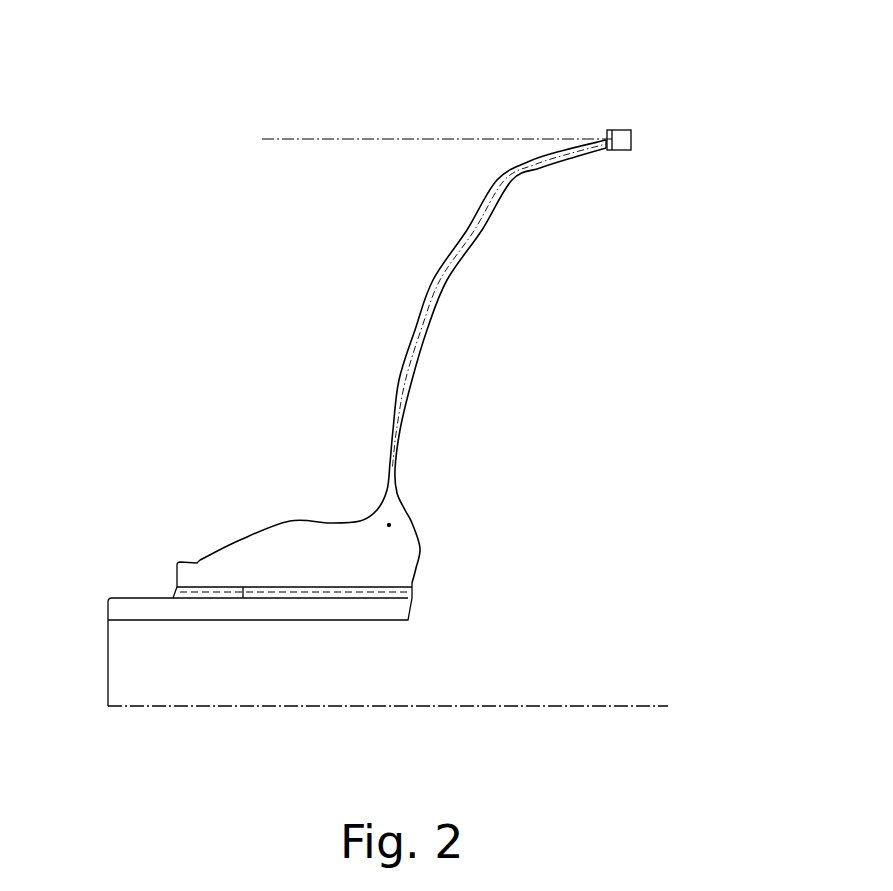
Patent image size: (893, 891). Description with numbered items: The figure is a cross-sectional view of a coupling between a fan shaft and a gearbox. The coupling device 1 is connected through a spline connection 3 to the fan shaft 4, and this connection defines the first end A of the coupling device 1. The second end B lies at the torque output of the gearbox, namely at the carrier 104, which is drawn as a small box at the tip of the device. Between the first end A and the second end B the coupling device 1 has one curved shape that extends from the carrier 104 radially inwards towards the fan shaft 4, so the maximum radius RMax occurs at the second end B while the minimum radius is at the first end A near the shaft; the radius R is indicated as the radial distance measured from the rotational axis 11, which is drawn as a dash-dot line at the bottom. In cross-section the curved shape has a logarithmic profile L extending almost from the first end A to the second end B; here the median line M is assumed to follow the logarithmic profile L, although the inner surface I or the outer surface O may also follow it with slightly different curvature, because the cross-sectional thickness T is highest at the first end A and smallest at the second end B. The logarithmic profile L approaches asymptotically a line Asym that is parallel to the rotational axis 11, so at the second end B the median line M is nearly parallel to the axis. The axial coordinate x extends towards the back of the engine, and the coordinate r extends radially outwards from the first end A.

The coupling device 1 is at (405, 360).
The spline connection 3 is at (175, 590).
The fan shaft 4 is at (127, 610).
The rotational axis 11 is at (203, 707).
The carrier 104 is at (622, 136).
The asymptote line Asym is at (297, 139).
The second end B is at (600, 131).
The outer surface O is at (450, 248).
The logarithmic profile L is at (445, 288).
The inner surface I is at (427, 332).
The cross-sectional thickness T is at (353, 409).
The radial coordinate r is at (389, 525).
The median line M is at (397, 477).
The first end A is at (392, 530).
The axial coordinate x is at (389, 525).
The radius R is at (533, 660).
The maximum radius RMax is at (609, 525).